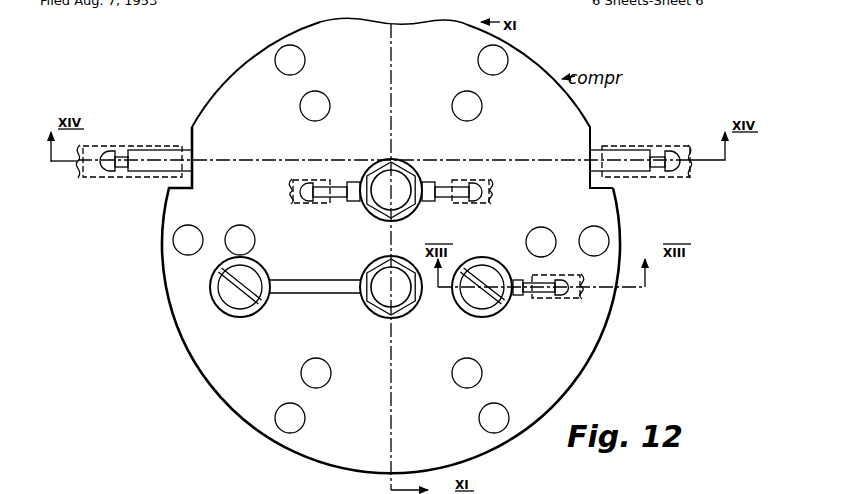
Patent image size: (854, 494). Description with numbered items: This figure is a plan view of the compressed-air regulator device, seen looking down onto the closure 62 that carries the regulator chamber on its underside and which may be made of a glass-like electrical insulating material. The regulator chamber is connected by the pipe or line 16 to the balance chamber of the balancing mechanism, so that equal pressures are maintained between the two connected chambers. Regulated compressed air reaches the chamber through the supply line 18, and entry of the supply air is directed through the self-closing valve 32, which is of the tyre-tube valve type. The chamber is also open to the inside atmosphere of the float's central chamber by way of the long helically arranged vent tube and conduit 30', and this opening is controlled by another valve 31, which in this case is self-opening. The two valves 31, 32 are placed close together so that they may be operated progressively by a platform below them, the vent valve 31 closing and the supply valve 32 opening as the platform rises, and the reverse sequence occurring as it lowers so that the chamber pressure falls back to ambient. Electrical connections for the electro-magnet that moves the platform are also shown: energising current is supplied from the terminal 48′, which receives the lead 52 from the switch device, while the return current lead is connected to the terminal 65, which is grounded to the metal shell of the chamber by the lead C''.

The closure 62 is at (575, 353).
The terminal 48′ is at (152, 155).
The lead 52 is at (107, 178).
The terminal 65 is at (633, 155).
The lead C'' is at (660, 180).
The self-closing valve 32 is at (396, 172).
The regulated compressed air supply line 18 is at (313, 182).
The vent tube and conduit 30' is at (209, 320).
The self-opening valve 31 is at (401, 297).
The pipe or line 16 is at (572, 293).